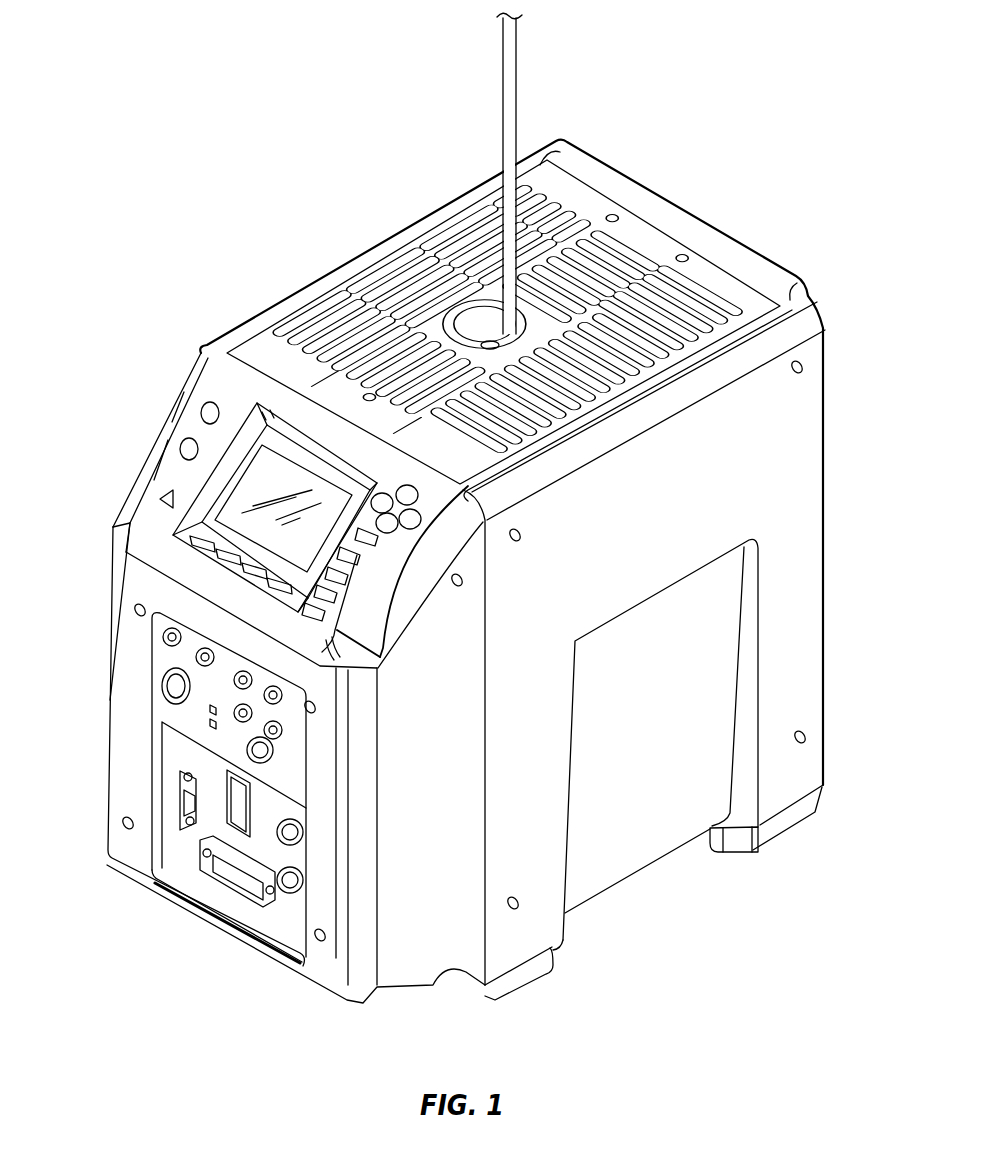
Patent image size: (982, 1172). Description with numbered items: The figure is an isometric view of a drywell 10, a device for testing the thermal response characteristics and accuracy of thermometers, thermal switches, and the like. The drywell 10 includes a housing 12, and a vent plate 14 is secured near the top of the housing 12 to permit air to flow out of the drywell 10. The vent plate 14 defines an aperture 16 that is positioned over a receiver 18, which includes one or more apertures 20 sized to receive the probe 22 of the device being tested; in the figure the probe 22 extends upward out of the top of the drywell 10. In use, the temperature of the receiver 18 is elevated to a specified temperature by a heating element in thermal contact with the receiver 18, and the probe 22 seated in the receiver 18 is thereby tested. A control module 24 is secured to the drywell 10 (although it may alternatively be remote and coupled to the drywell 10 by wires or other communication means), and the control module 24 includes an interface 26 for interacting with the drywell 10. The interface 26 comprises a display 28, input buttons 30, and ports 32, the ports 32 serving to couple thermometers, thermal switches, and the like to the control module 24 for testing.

The drywell 10 is at (215, 240).
The housing 12 is at (770, 480).
The vent plate 14 is at (458, 262).
The aperture 16 is at (491, 343).
The receiver 18 is at (366, 268).
The apertures 20 is at (430, 263).
The probe 22 is at (513, 103).
The control module 24 is at (182, 478).
The interface 26 is at (100, 645).
The display 28 is at (277, 493).
The input buttons 30 is at (338, 596).
The ports 32 is at (288, 832).